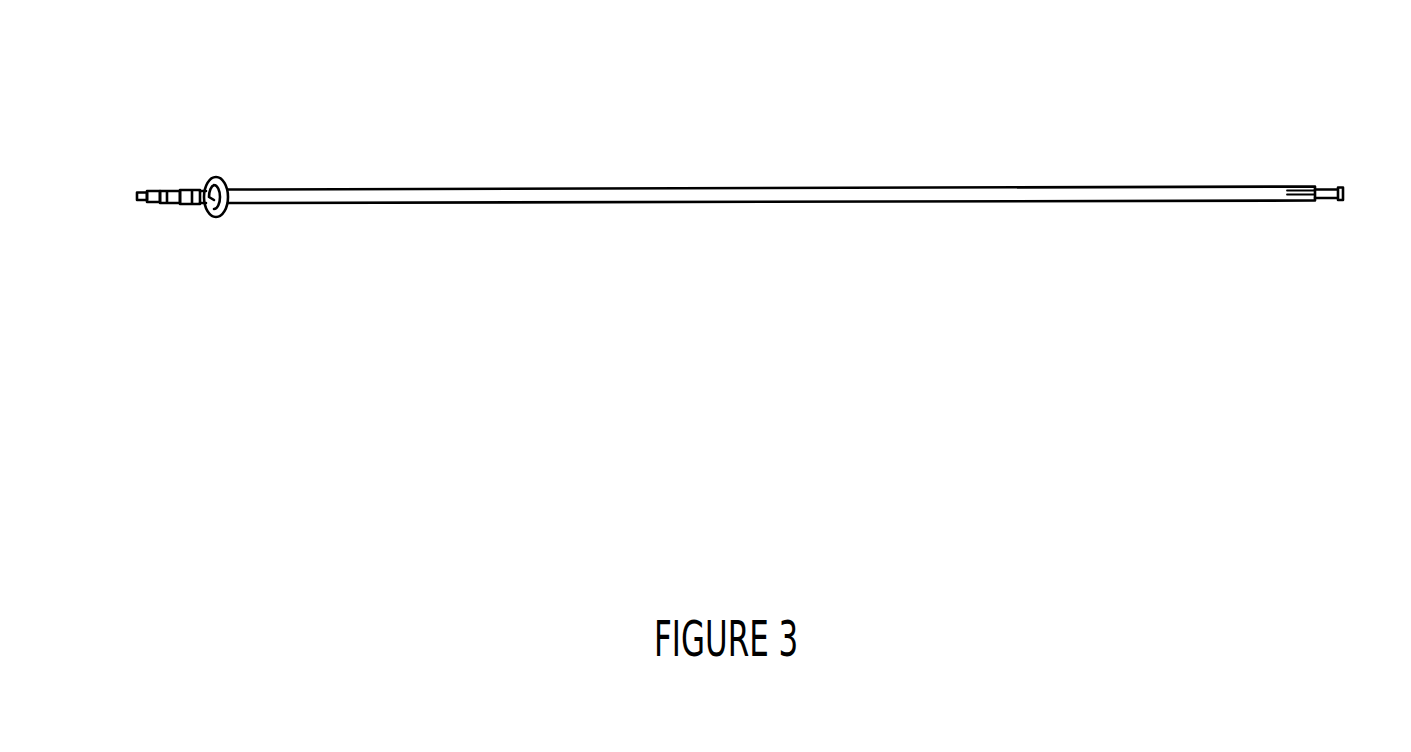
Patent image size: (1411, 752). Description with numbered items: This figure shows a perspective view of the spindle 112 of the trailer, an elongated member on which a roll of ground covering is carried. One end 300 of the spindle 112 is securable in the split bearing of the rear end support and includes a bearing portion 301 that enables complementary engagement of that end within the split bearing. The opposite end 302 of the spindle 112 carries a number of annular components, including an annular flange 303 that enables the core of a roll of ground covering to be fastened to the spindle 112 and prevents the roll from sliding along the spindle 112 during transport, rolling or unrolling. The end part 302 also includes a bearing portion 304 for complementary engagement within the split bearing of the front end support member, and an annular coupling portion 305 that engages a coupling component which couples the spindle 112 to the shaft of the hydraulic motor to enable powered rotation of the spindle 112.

The spindle 112 is at (772, 157).
The end of the spindle 300 is at (1350, 158).
The bearing portion 301 is at (1341, 201).
The opposite end of the spindle 302 is at (173, 165).
The annular flange 303 is at (222, 177).
The bearing portion 304 is at (165, 203).
The annular coupling portion 305 is at (137, 194).